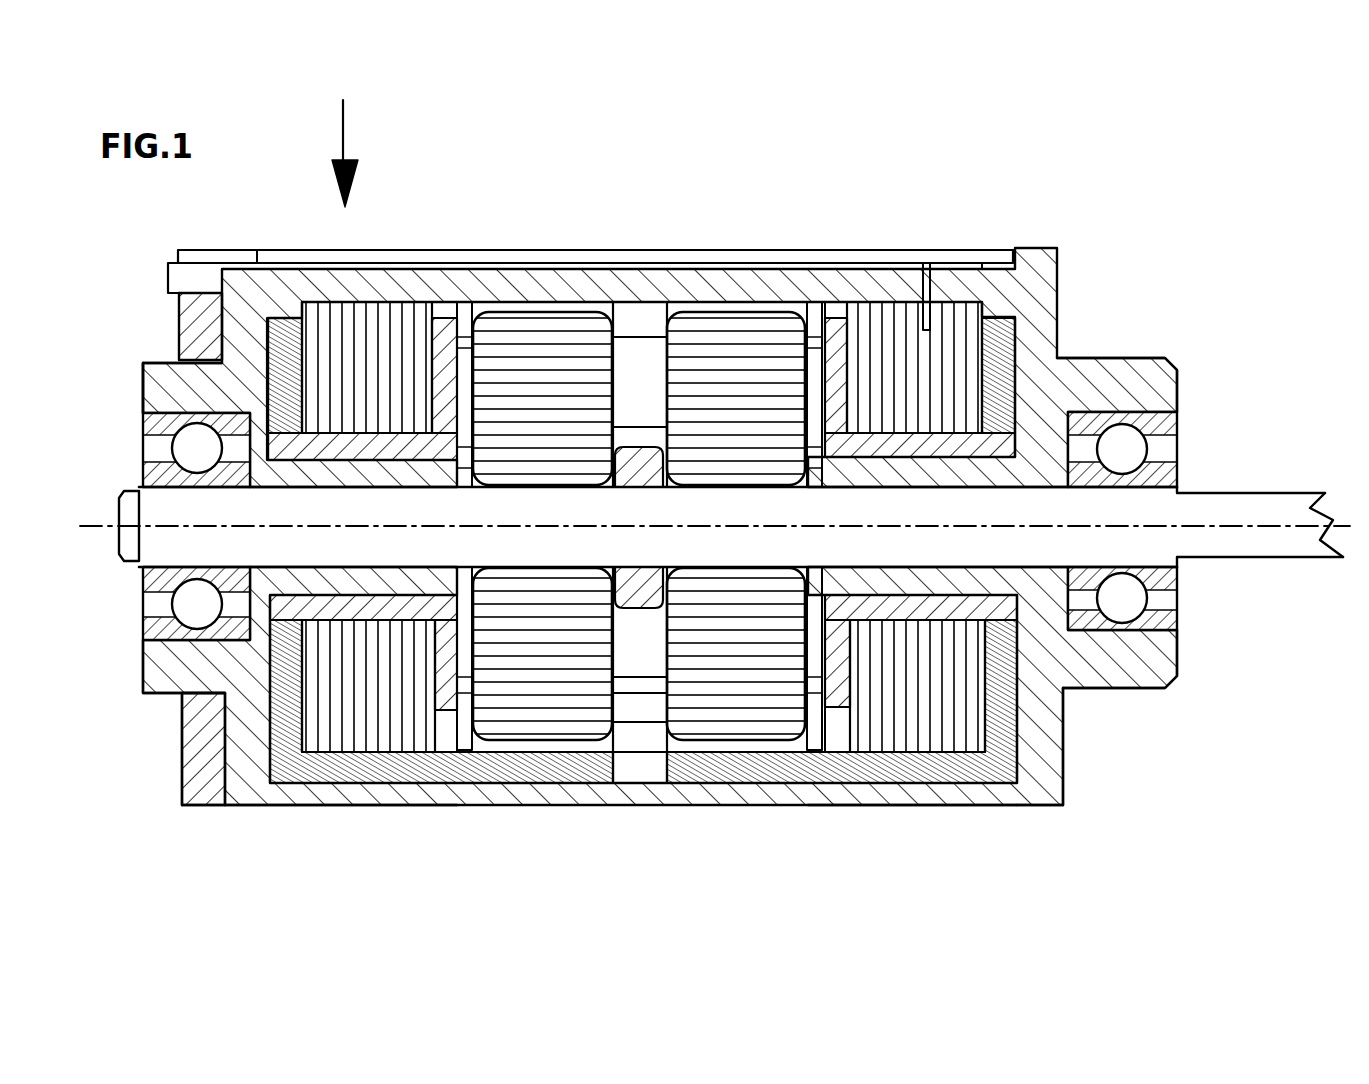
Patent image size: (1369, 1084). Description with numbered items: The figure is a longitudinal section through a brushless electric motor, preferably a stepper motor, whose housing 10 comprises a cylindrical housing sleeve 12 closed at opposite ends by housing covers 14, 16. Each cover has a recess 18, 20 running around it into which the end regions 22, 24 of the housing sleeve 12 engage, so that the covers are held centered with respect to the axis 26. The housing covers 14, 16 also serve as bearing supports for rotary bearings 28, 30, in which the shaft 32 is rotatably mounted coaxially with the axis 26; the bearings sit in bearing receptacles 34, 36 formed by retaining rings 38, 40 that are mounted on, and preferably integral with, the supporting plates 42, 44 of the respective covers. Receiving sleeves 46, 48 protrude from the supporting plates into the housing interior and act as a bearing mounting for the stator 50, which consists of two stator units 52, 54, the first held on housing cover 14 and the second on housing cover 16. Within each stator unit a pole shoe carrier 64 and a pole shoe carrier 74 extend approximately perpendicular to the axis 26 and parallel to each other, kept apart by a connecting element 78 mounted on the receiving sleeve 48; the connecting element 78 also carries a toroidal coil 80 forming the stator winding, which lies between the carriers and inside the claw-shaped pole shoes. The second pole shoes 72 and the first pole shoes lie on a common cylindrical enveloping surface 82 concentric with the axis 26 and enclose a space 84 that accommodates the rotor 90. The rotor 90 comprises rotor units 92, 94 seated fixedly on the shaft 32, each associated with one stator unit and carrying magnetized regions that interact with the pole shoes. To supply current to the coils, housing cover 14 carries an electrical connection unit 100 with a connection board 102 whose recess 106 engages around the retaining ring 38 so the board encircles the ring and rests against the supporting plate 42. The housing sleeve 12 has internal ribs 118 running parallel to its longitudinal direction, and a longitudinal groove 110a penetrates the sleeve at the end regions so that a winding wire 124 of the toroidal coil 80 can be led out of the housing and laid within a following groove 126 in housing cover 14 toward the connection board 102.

The housing 10 is at (537, 205).
The housing sleeve 12 is at (555, 795).
The housing cover 14 is at (192, 663).
The housing cover 16 is at (1142, 364).
The recess 18 is at (272, 803).
The recess 20 is at (1007, 793).
The end region 22 is at (330, 793).
The end region 24 is at (960, 790).
The axis 26 is at (1293, 523).
The rotary bearing 28 is at (159, 588).
The rotary bearing 30 is at (1173, 578).
The shaft 32 is at (1218, 513).
The bearing receptacle 34 is at (159, 429).
The bearing receptacle 36 is at (1176, 428).
The retaining ring 38 is at (159, 387).
The retaining ring 40 is at (1167, 657).
The supporting plate 42 is at (195, 767).
The supporting plate 44 is at (1047, 715).
The receiving sleeve 46 is at (355, 470).
The receiving sleeve 48 is at (947, 467).
The stator 50 is at (476, 296).
The stator unit 52 is at (413, 707).
The stator unit 54 is at (887, 727).
The pole shoe carrier 64 is at (835, 310).
The second pole shoes 72 is at (830, 787).
The pole shoe carrier 74 is at (1020, 763).
The connecting element 78 is at (923, 437).
The toroidal coil 80 is at (950, 330).
The enveloping surface 82 is at (645, 755).
The space 84 is at (778, 703).
The rotor 90 is at (656, 292).
The rotor unit 92 is at (500, 330).
The rotor unit 94 is at (690, 330).
The electrical connection unit 100 is at (170, 300).
The connection board 102 is at (195, 731).
The recess 106 is at (150, 366).
The longitudinal groove 110a is at (1002, 260).
The ribs 118 is at (750, 300).
The winding wire 124 is at (872, 330).
The groove 126 is at (215, 258).